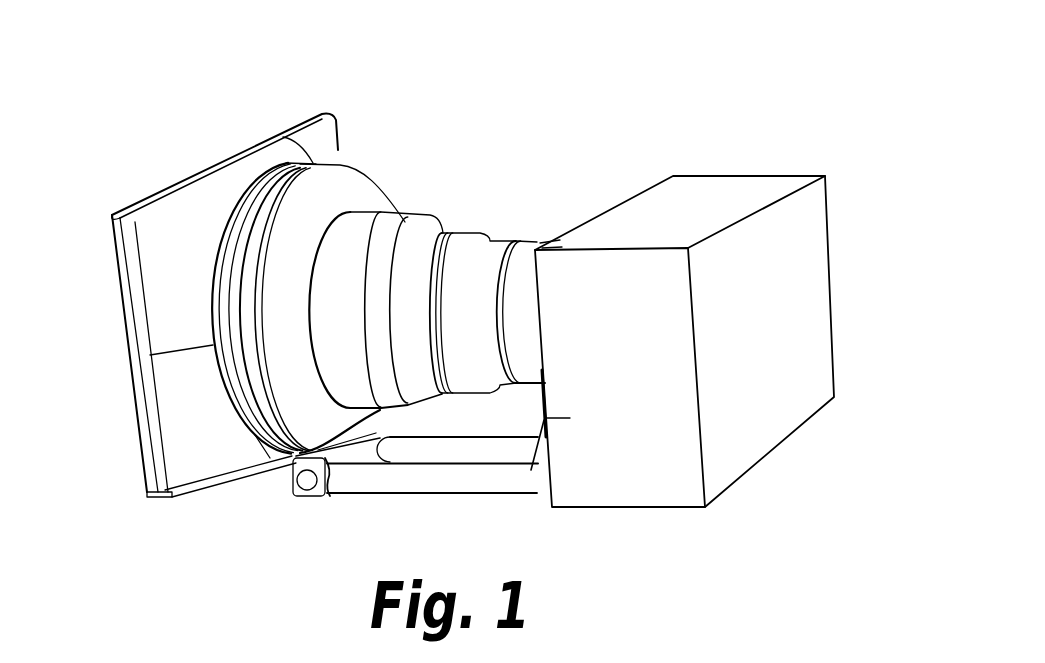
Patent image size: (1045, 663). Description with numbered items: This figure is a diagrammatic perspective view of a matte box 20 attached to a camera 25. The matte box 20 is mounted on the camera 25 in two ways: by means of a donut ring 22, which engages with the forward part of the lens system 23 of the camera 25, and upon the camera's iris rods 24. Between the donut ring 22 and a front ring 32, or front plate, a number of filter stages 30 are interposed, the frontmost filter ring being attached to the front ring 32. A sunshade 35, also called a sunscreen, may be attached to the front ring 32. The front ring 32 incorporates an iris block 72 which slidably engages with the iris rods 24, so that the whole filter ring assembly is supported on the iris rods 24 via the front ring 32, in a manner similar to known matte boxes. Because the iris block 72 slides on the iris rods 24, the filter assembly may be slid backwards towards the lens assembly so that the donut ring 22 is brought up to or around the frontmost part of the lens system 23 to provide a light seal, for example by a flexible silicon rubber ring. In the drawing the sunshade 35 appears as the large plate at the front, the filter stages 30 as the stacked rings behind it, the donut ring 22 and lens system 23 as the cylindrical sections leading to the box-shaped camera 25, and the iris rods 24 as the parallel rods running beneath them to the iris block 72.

The matte box 20 is at (550, 95).
The donut ring 22 is at (367, 232).
The lens system 23 is at (433, 249).
The iris rods 24 is at (392, 480).
The camera 25 is at (725, 207).
The filter stages 30 is at (313, 163).
The front ring 32 is at (252, 430).
The sunshade 35 is at (183, 215).
The iris block 72 is at (317, 498).